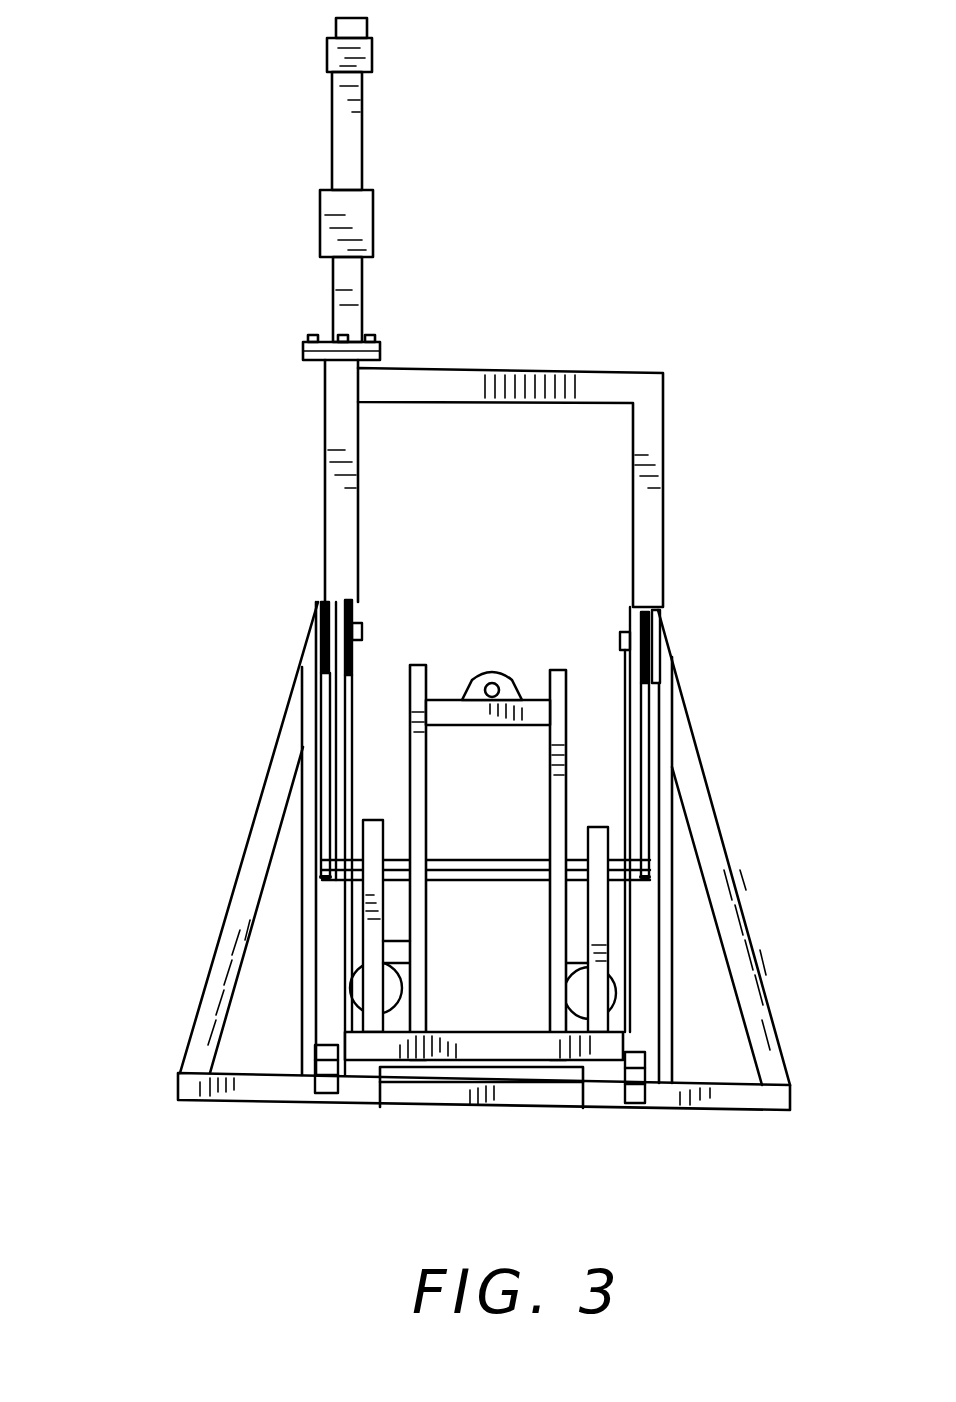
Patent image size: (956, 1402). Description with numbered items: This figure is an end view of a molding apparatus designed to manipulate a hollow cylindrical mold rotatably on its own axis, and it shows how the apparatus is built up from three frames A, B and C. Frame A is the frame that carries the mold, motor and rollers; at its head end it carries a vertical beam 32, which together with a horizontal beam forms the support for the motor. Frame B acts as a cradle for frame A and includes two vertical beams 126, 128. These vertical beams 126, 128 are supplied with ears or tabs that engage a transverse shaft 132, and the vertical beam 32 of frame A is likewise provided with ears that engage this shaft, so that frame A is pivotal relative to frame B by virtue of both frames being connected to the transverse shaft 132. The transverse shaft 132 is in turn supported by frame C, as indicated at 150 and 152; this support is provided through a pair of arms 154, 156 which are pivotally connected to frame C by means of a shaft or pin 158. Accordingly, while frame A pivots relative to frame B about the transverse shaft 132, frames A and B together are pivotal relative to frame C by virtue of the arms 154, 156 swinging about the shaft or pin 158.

The vertical beam 32 is at (428, 778).
The vertical beam 126 is at (386, 958).
The vertical beam 128 is at (600, 937).
The transverse shaft 132 is at (505, 872).
The shaft support on frame C 150 is at (310, 867).
The shaft support on frame C 152 is at (660, 850).
The arm 154 is at (635, 707).
The arm 156 is at (335, 805).
The shaft or pin 158 is at (350, 610).
The frame A is at (437, 1032).
The frame B is at (393, 943).
The frame C is at (318, 428).